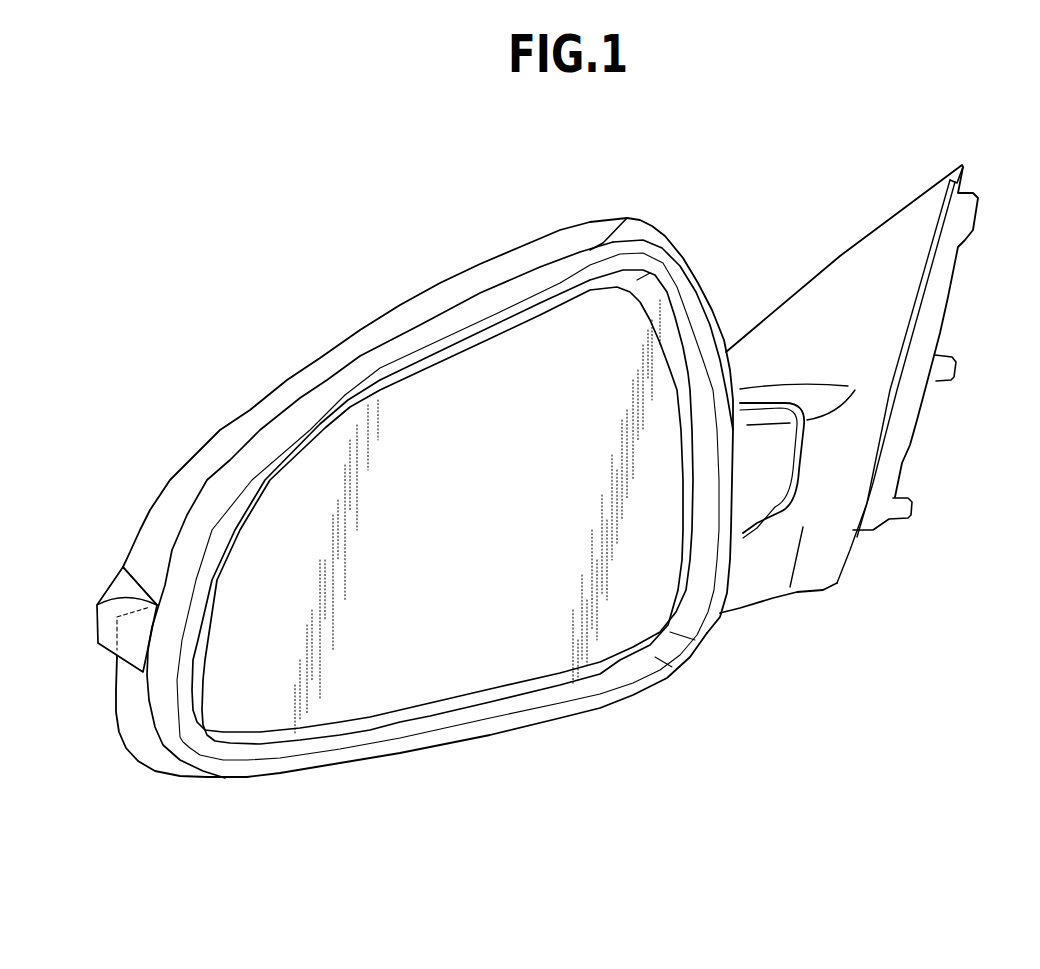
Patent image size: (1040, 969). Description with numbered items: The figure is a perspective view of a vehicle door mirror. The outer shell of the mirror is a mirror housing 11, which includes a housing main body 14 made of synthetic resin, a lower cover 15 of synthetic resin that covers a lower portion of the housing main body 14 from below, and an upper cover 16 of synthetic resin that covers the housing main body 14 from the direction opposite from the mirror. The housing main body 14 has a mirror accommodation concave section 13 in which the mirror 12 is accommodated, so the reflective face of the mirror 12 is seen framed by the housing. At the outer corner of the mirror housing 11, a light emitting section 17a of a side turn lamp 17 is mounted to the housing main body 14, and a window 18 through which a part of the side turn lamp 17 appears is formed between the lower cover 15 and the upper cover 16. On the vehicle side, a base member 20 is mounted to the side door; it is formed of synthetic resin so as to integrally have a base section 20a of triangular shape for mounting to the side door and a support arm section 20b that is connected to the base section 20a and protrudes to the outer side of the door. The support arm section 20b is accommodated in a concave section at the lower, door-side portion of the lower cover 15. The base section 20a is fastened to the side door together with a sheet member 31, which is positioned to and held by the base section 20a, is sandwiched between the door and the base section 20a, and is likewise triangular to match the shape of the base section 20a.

The mirror housing 11 is at (562, 226).
The mirror 12 is at (472, 575).
The mirror accommodation concave section 13 is at (443, 710).
The housing main body 14 is at (453, 320).
The lower cover 15 is at (135, 727).
The upper cover 16 is at (358, 342).
The side turn lamp 17 is at (95, 638).
The light emitting section 17a is at (117, 582).
The window 18 is at (101, 604).
The base member 20 is at (755, 648).
The base section 20a is at (850, 540).
The support arm section 20b is at (765, 580).
The sheet member 31 is at (923, 333).